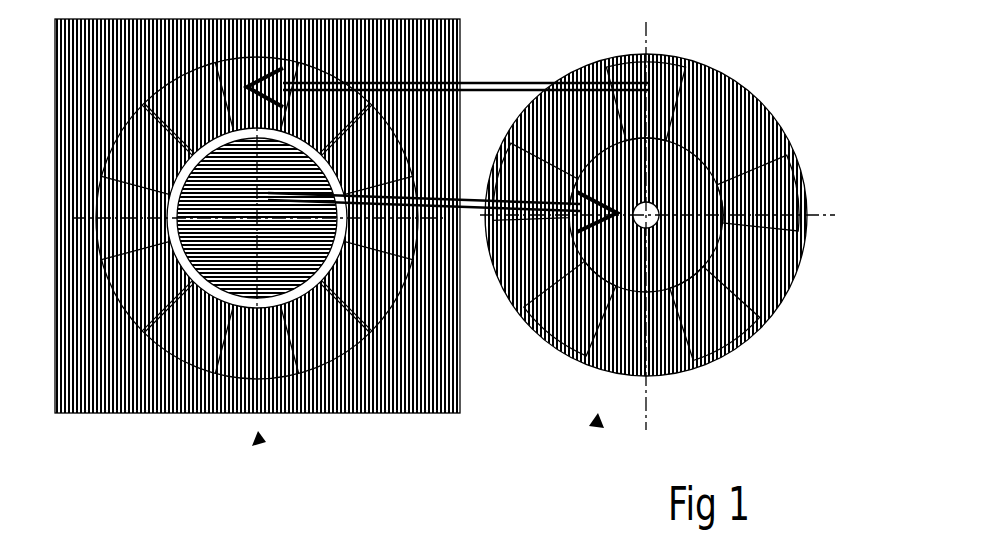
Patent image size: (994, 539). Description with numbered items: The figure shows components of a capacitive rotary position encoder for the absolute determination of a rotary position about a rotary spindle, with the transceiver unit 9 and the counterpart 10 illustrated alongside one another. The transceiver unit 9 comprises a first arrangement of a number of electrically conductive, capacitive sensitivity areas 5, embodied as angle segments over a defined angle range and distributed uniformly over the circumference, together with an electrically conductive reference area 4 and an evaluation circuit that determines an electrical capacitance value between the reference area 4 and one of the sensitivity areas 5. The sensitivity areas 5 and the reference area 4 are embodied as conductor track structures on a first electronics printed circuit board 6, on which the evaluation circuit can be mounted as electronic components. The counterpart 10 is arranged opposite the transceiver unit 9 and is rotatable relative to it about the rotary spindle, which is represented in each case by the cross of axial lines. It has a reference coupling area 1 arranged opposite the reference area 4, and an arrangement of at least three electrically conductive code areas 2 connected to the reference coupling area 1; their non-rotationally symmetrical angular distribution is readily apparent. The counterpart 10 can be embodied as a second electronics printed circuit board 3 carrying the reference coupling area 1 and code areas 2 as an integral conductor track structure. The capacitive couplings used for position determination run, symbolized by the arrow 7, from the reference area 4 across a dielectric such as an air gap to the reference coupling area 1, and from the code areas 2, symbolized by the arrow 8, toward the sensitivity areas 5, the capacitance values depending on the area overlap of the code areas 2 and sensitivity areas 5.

The reference coupling area 1 is at (694, 177).
The code areas 2 is at (651, 192).
The second electronics printed circuit board 3 is at (657, 233).
The reference area 4 is at (277, 263).
The sensitivity areas 5 is at (257, 267).
The first electronics printed circuit board 6 is at (257, 246).
The arrow 7 is at (442, 327).
The arrow 8 is at (448, 65).
The transceiver unit 9 is at (258, 281).
The counterpart 10 is at (546, 471).